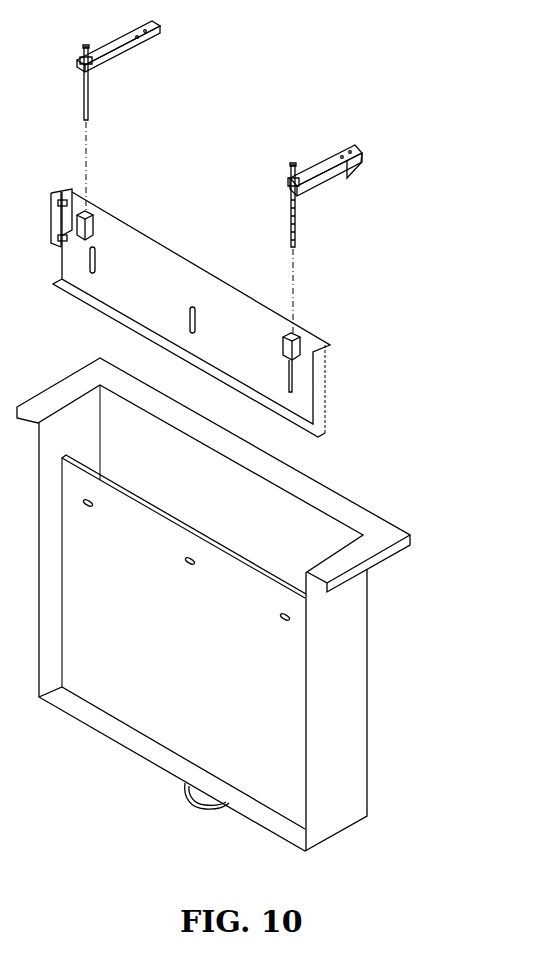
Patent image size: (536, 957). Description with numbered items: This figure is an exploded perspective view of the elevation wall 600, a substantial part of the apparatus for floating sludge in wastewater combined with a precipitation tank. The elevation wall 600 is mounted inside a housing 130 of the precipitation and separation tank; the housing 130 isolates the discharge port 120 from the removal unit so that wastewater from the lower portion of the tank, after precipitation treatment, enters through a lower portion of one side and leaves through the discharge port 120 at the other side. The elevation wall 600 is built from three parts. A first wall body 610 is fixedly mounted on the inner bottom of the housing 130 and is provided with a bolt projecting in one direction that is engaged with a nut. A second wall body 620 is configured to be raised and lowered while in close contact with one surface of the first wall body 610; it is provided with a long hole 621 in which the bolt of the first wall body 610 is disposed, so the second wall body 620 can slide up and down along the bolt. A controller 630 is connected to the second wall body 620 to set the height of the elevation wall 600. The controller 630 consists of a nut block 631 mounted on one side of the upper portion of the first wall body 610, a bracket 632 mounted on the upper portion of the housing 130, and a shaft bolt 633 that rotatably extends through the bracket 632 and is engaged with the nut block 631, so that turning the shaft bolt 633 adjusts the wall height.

The housing 130 is at (345, 697).
The first wall body 610 is at (125, 686).
The discharge port 120 is at (196, 806).
The elevation wall 600 is at (183, 194).
The second wall body 620 is at (213, 292).
The long hole 621 is at (300, 393).
The controller 630 is at (439, 125).
The nut block 631 is at (307, 334).
The bracket 632 is at (342, 146).
The shaft bolt 633 is at (300, 198).